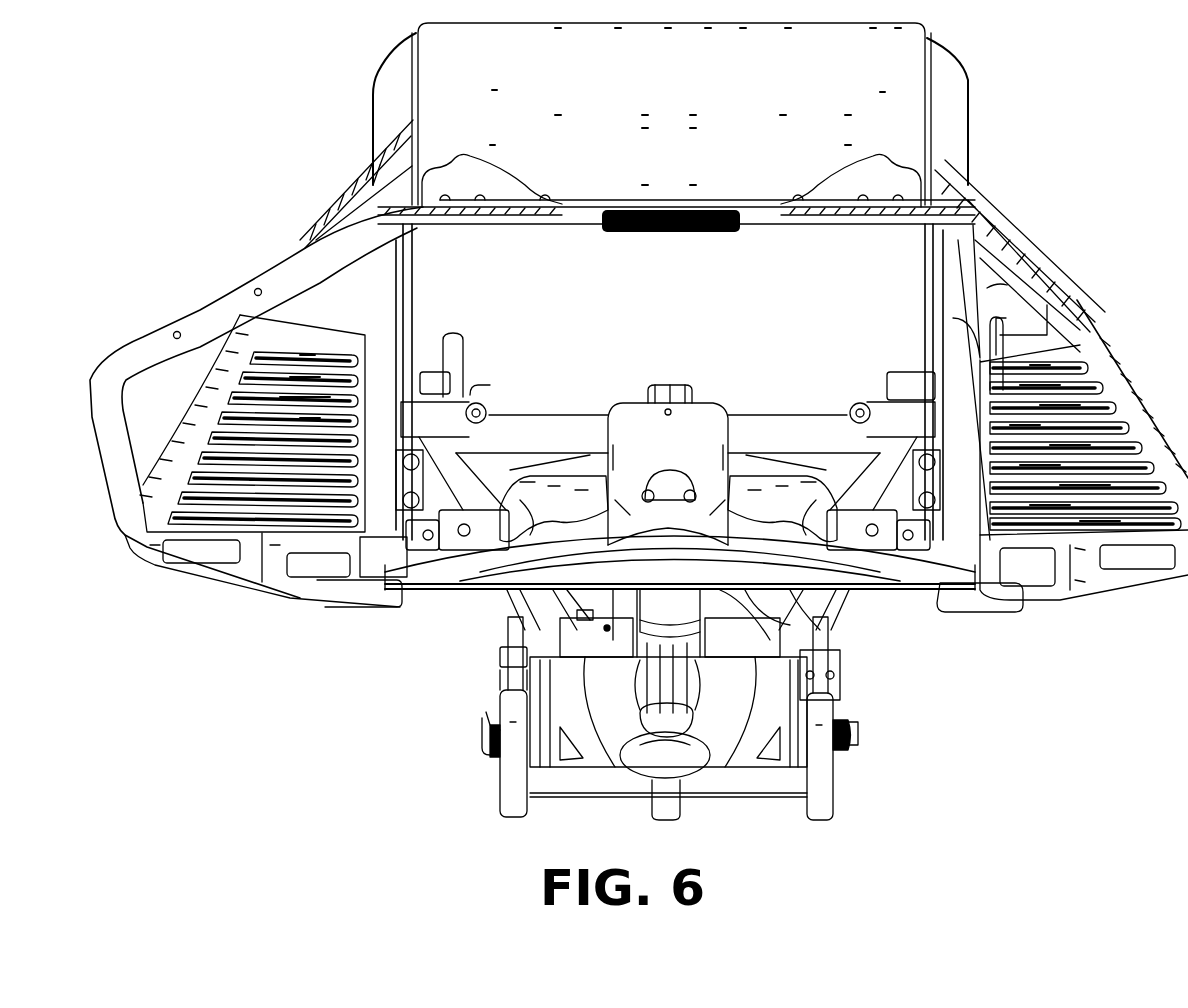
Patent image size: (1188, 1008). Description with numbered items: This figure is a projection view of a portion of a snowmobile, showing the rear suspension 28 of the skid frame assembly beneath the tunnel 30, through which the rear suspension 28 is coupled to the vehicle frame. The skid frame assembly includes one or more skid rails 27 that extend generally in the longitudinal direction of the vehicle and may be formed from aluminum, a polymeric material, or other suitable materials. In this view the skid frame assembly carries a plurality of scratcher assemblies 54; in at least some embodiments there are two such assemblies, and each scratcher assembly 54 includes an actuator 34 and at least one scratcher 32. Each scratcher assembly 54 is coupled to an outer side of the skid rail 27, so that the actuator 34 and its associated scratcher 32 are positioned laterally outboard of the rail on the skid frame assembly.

The tunnel 30 is at (950, 72).
The rear suspension 28 is at (782, 352).
The skid rail 27 is at (832, 657).
The scratcher 32 is at (485, 720).
The actuator 34 is at (497, 760).
The scratcher assembly 54 is at (440, 755).